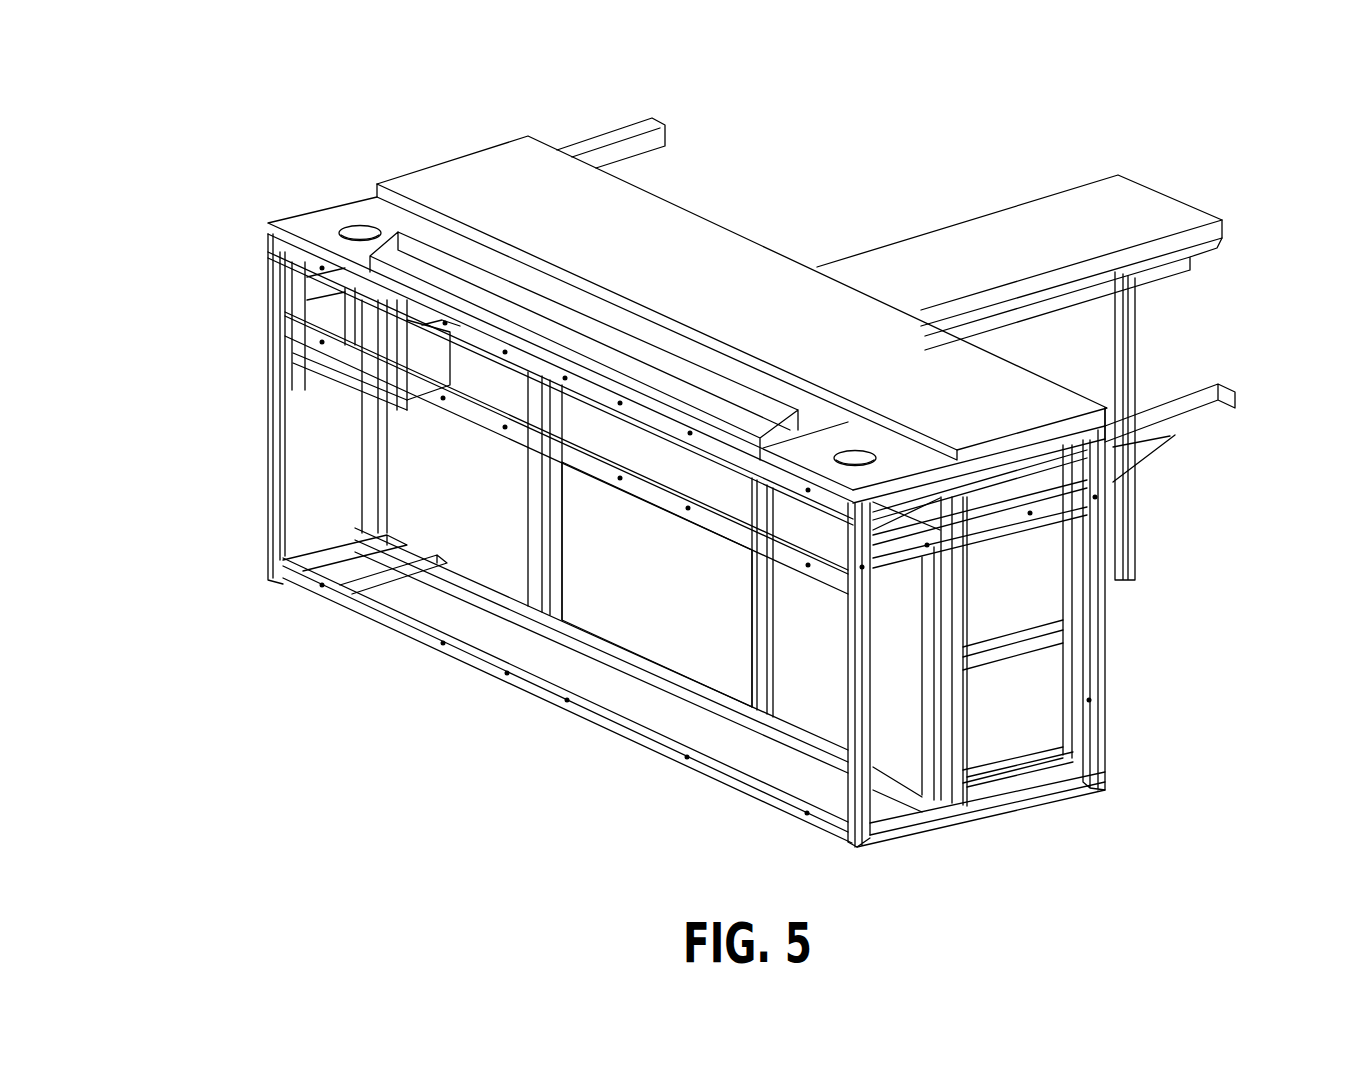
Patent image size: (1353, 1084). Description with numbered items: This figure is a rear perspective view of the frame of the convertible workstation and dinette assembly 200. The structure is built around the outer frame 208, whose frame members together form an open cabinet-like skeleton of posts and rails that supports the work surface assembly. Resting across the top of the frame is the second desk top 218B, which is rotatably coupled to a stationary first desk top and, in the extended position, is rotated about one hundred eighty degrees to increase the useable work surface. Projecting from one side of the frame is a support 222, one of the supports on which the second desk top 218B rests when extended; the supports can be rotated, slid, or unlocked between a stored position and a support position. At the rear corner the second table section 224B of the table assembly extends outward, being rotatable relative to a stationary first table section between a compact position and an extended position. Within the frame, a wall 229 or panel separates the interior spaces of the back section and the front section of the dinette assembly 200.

The dinette assembly 200 is at (242, 90).
The outer frame 208 is at (268, 475).
The second desk top 218B is at (768, 294).
The second table section 224B is at (1018, 271).
The support 222 is at (1195, 408).
The wall 229 is at (687, 589).